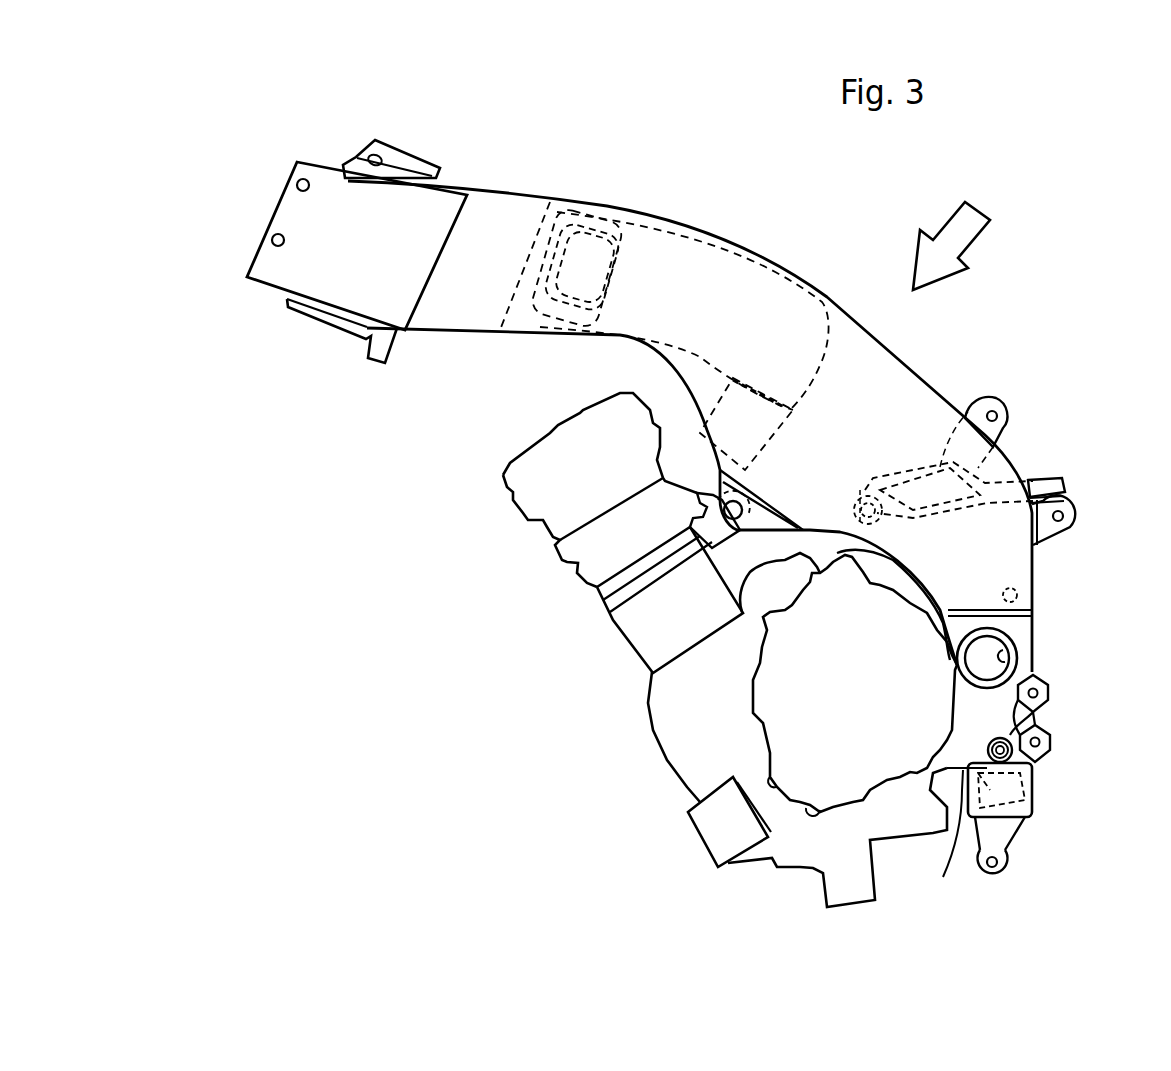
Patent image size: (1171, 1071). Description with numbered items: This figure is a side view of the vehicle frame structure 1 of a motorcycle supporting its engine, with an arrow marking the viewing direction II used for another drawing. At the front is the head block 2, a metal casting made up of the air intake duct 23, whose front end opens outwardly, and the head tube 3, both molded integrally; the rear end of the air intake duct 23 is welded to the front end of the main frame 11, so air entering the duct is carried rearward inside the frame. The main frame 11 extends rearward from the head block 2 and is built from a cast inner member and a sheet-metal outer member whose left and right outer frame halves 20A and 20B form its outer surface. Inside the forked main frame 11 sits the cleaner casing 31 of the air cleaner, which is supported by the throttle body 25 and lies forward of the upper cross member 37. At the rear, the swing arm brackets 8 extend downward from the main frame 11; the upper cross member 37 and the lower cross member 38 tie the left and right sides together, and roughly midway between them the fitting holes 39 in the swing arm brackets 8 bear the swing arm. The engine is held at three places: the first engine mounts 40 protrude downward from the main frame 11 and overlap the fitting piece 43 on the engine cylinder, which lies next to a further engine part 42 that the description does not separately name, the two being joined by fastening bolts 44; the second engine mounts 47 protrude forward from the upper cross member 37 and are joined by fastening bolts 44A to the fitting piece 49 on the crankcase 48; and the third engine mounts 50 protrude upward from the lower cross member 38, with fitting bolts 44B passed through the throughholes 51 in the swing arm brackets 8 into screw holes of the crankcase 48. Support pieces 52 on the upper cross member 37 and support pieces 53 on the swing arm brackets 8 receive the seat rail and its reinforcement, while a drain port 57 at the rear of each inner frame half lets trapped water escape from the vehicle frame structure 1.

The vehicle frame structure 1 is at (755, 248).
The head block 2 is at (328, 112).
The head tube 3 is at (345, 176).
The swing arm brackets 8 is at (1025, 648).
The main frame 11 is at (513, 206).
The outer frame half 20A is at (581, 267).
The outer frame half 20B is at (640, 213).
The air intake duct 23 is at (317, 238).
The throttle body 25 is at (763, 433).
The cleaner casing 31 is at (832, 362).
The upper cross member 37 is at (940, 467).
The lower cross member 38 is at (1012, 823).
The fitting holes 39 is at (1003, 656).
The first engine mounts 40 is at (740, 540).
The cylinder block 42 is at (625, 617).
The fitting piece 43 is at (615, 593).
The fastening bolts 44 is at (724, 503).
The fastening bolts 44A is at (862, 492).
The fitting bolts 44B is at (1035, 718).
The second engine mounts 47 is at (887, 520).
The crankcase 48 is at (683, 758).
The fitting piece 49 is at (866, 540).
The third engine mounts 50 is at (956, 840).
The throughholes 51 is at (1015, 760).
The support pieces 52 is at (1004, 403).
The support pieces 53 is at (1074, 518).
The drain port 57 is at (1033, 580).
The viewing direction II is at (977, 239).